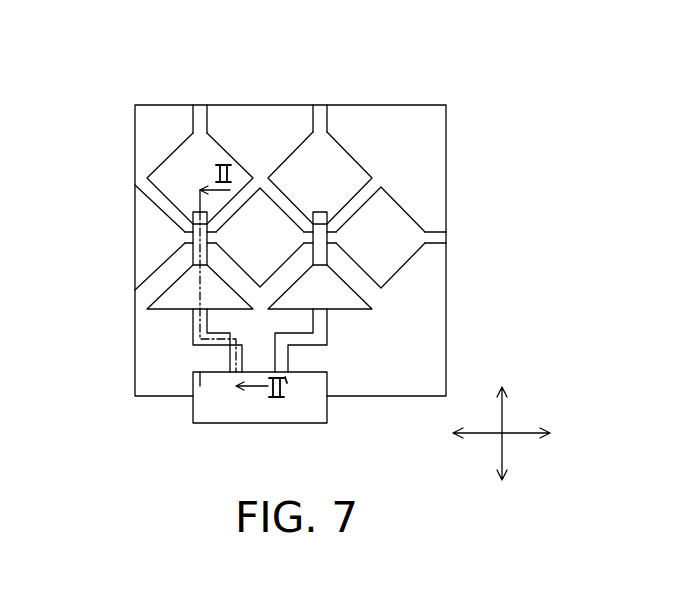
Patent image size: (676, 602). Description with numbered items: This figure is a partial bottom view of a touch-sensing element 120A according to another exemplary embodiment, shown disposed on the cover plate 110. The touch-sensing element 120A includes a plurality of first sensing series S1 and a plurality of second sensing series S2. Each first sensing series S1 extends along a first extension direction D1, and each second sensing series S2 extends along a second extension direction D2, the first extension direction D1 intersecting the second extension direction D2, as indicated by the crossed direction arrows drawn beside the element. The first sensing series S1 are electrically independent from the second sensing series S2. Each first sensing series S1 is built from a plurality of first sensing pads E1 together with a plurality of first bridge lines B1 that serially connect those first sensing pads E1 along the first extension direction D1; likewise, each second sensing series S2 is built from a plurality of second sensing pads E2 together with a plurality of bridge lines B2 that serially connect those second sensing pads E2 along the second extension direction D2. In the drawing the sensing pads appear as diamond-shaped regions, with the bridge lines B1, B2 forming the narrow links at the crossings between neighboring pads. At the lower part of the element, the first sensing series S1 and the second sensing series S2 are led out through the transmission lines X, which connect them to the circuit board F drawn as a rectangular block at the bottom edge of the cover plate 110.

The touch-sensing element 120A is at (202, 33).
The first sensing series S1 is at (207, 96).
The second sensing series S2 is at (126, 240).
The first sensing pad E1 is at (212, 152).
The second sensing pad E2 is at (276, 228).
The first bridge line B1 is at (150, 285).
The bridge line B2 is at (210, 228).
The cover plate 110 is at (150, 358).
The transmission line X is at (192, 346).
The circuit board F is at (193, 407).
The first extension direction D1 is at (502, 417).
The second extension direction D2 is at (519, 439).